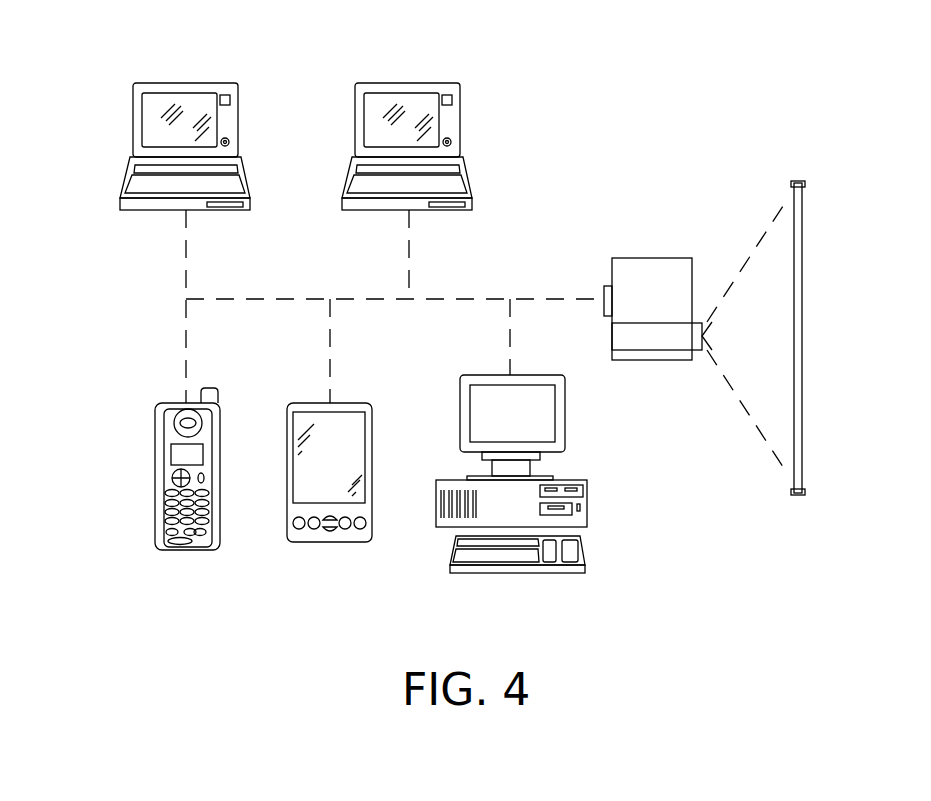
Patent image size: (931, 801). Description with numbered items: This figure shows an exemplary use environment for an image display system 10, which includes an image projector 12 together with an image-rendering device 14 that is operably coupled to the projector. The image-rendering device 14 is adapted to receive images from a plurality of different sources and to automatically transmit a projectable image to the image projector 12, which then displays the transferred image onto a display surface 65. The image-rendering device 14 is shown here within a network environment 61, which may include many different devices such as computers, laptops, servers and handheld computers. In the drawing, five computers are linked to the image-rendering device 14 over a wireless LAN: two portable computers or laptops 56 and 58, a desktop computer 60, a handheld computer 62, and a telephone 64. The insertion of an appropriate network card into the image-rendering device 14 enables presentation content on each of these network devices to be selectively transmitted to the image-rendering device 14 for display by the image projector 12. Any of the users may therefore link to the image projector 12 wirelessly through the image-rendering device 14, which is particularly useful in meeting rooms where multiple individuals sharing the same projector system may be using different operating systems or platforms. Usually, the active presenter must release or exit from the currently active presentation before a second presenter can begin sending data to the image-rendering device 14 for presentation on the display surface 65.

The image display system 10 is at (656, 294).
The image projector 12 is at (649, 342).
The image-rendering device 14 is at (604, 293).
The laptop 56 is at (238, 112).
The laptop 58 is at (463, 112).
The desktop computer 60 is at (562, 408).
The network environment 61 is at (118, 120).
The handheld computer 62 is at (373, 430).
The telephone 64 is at (220, 432).
The display surface 65 is at (802, 303).